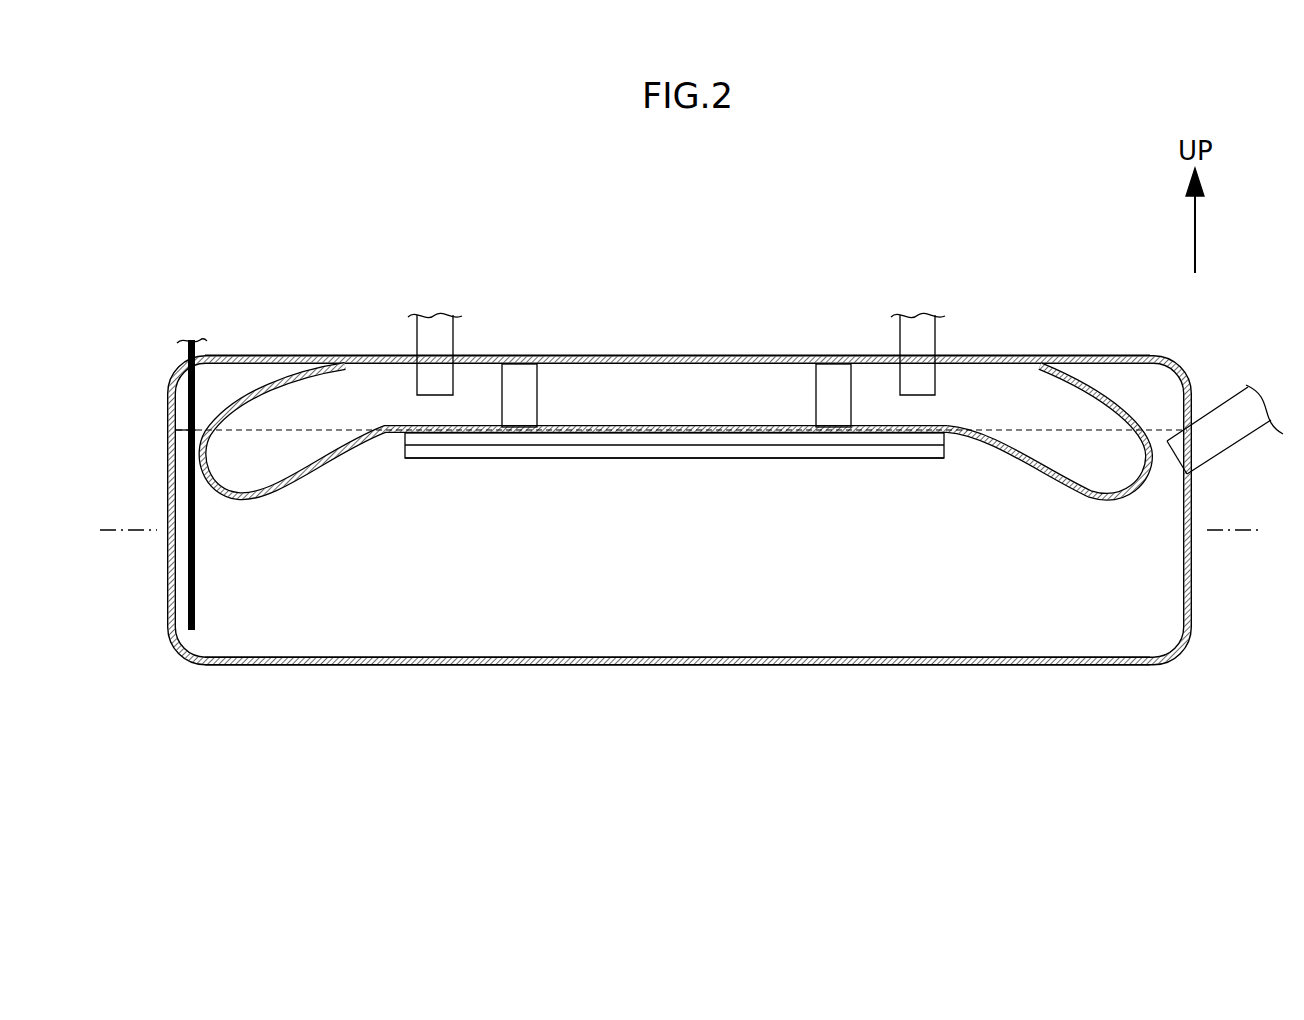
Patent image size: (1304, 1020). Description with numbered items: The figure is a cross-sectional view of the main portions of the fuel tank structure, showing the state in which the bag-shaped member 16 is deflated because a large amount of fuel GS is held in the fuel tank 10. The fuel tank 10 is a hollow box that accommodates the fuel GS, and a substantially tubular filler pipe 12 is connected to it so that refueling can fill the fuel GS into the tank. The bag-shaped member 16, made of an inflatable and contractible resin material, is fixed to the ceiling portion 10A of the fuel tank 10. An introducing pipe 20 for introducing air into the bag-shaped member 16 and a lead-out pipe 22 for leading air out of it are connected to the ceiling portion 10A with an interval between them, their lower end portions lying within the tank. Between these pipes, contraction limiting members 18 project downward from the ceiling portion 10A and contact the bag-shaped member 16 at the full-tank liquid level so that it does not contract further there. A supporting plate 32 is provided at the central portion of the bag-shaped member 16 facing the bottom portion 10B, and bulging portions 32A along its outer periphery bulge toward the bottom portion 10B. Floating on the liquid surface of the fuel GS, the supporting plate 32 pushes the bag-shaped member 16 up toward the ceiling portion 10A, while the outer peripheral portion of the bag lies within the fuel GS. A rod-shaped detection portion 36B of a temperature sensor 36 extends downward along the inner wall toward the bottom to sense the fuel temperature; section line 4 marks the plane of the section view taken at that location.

The fuel tank 10 is at (708, 668).
The ceiling portion 10A is at (224, 368).
The bottom portion 10B is at (359, 656).
The filler pipe 12 is at (1223, 407).
The bag-shaped member 16 is at (1118, 393).
The contraction limiting members 18 is at (538, 390).
The introducing pipe 20 is at (453, 330).
The lead-out pipe 22 is at (935, 335).
The supporting plate 32 is at (674, 495).
The bulging portions 32A is at (700, 460).
The temperature sensor 36 is at (276, 484).
The detection portion 36B is at (196, 570).
The section line 4- 4 is at (103, 536).
The fuel GS is at (966, 643).